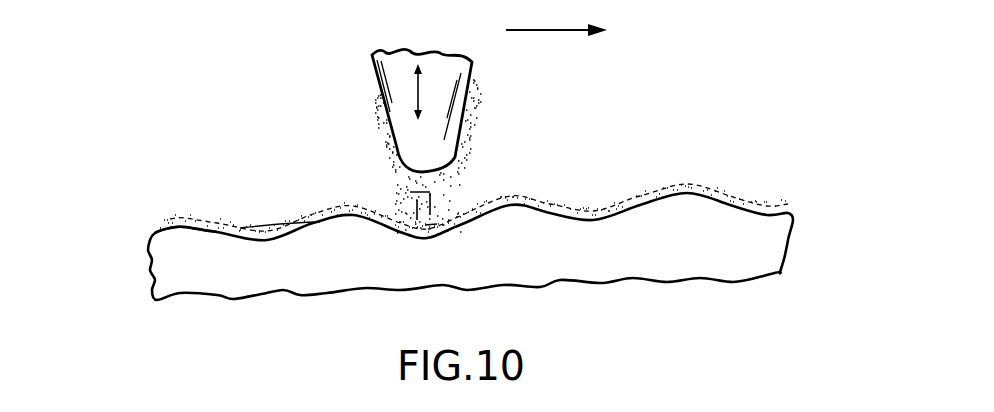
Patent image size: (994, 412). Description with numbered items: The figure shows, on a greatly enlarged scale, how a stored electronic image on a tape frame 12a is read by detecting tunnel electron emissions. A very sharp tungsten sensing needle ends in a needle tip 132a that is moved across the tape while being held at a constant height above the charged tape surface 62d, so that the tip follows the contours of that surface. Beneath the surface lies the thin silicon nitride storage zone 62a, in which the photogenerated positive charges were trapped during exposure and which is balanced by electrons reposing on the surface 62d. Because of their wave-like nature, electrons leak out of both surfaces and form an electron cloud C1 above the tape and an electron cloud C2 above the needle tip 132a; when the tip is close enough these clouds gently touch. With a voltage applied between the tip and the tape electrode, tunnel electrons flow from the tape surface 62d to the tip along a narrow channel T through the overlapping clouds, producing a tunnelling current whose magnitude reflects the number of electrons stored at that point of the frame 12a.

The tape frame 12a is at (257, 315).
The storage zone 62a is at (168, 262).
The tape surface 62d is at (167, 237).
The needle tip 132a is at (445, 97).
The electron cloud C1 is at (270, 213).
The electron cloud C2 is at (380, 130).
The narrow channel T is at (450, 190).